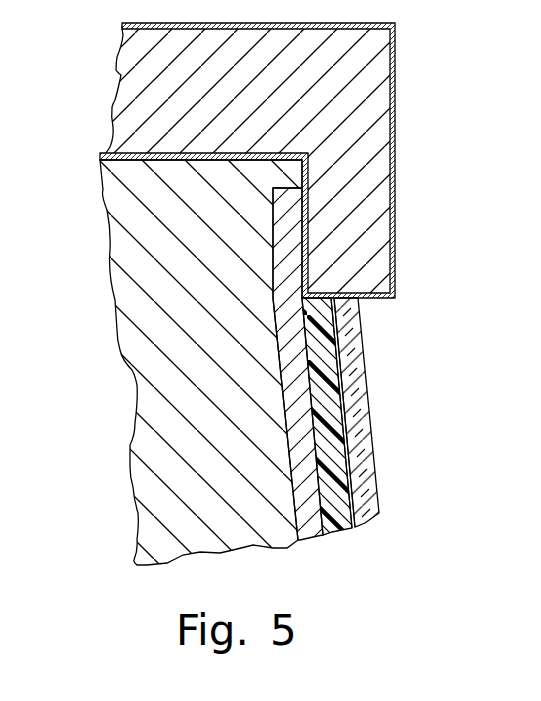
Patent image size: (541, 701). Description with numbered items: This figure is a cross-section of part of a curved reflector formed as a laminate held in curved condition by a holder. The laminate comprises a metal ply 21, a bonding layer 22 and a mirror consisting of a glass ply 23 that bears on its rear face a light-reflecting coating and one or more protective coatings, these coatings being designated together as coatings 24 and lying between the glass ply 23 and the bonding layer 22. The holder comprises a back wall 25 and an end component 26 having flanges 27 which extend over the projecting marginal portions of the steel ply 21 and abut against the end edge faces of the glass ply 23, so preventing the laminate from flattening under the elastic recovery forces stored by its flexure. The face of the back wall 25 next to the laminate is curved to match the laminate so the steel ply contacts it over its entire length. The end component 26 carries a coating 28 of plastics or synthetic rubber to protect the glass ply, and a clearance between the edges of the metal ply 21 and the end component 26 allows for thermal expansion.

The metal ply 21 is at (305, 507).
The bonding layer 22 is at (350, 503).
The glass ply 23 is at (362, 477).
The light-reflecting and protective coatings 24 is at (347, 413).
The back wall 25 is at (145, 270).
The end component 26 is at (143, 65).
The flange 27 is at (365, 252).
The coating 28 is at (380, 298).